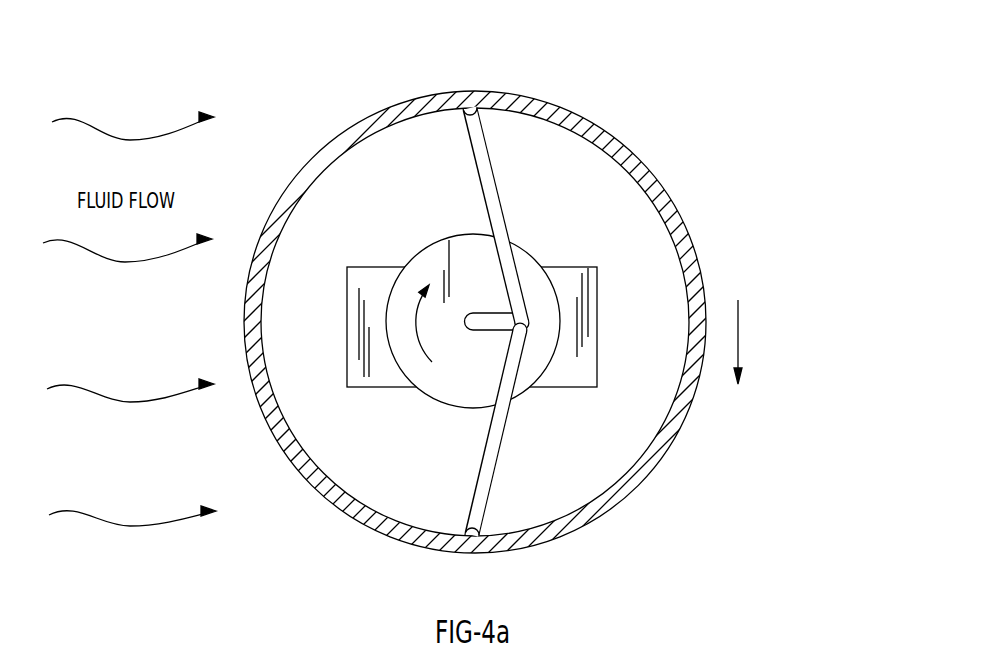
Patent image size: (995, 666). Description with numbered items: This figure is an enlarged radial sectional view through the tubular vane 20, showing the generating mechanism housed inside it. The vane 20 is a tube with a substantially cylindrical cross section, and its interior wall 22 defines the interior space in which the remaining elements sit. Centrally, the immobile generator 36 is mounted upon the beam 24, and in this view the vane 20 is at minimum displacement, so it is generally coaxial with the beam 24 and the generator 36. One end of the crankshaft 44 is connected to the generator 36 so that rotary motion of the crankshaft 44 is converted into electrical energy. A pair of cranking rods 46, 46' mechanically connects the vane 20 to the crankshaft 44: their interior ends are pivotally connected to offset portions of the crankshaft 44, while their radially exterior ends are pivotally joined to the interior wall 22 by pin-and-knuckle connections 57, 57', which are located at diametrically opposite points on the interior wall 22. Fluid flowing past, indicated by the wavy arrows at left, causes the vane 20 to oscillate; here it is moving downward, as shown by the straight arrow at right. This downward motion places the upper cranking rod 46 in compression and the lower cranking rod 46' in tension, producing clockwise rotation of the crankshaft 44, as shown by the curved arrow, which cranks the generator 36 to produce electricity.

The vane 20 is at (348, 128).
The interior wall 22 is at (340, 488).
The beam 24 is at (573, 288).
The generator 36 is at (493, 295).
The crankshaft 44 is at (487, 321).
The upper cranking rod 46 is at (550, 196).
The lower cranking rod 46' is at (572, 446).
The pin-and-knuckle connection 57 is at (431, 61).
The pin-and-knuckle connection 57' is at (516, 570).